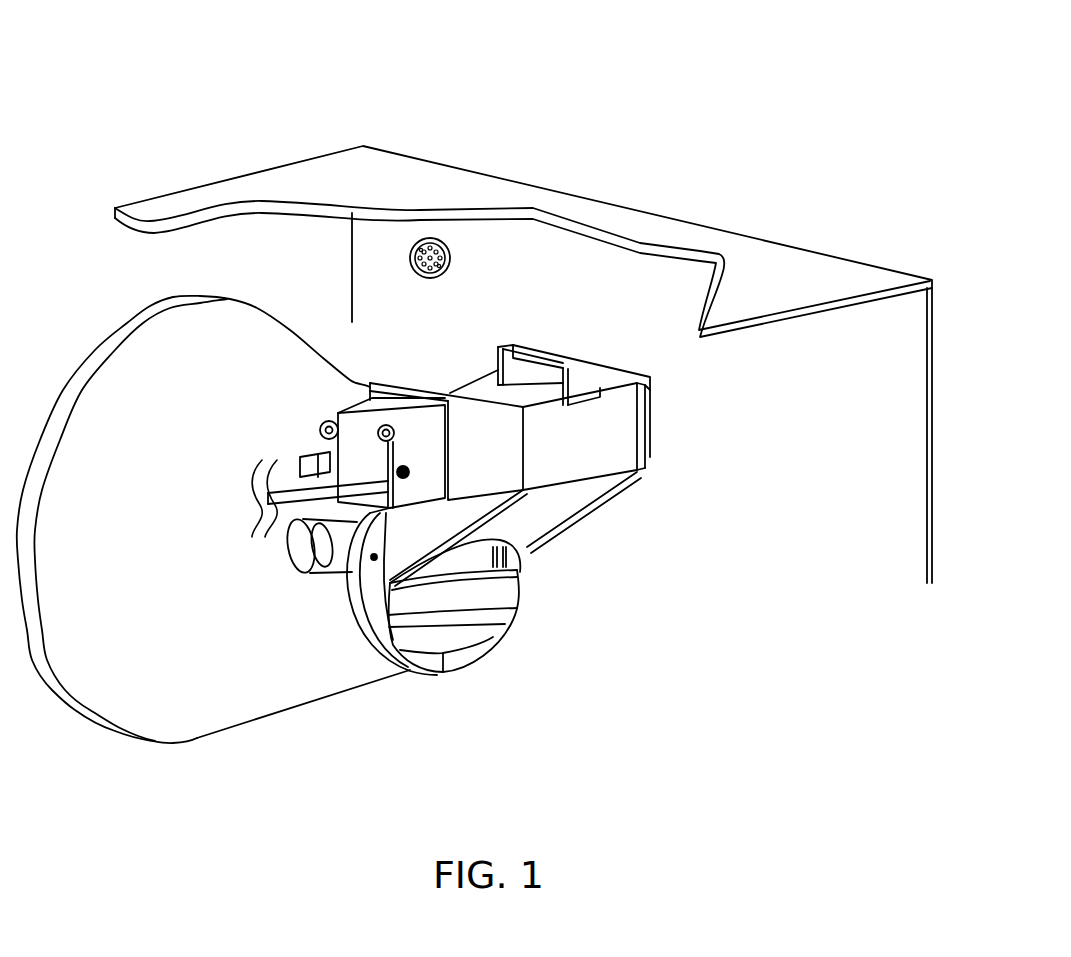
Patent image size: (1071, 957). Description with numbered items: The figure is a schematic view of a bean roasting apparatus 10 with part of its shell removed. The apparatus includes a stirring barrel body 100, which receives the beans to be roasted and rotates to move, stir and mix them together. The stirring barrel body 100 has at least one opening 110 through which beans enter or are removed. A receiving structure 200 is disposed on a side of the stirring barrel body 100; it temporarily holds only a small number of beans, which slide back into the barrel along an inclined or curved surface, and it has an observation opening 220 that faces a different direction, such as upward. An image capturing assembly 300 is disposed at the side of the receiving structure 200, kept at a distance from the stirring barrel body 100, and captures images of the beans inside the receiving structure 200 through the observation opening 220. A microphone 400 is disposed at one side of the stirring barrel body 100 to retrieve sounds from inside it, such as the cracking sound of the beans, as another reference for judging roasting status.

The bean roasting apparatus 10 is at (816, 46).
The stirring barrel body 100 is at (172, 723).
The opening 110 is at (407, 670).
The receiving structure 200 is at (507, 595).
The observation opening 220 is at (548, 530).
The image capturing assembly 300 is at (407, 403).
The microphone 400 is at (437, 263).